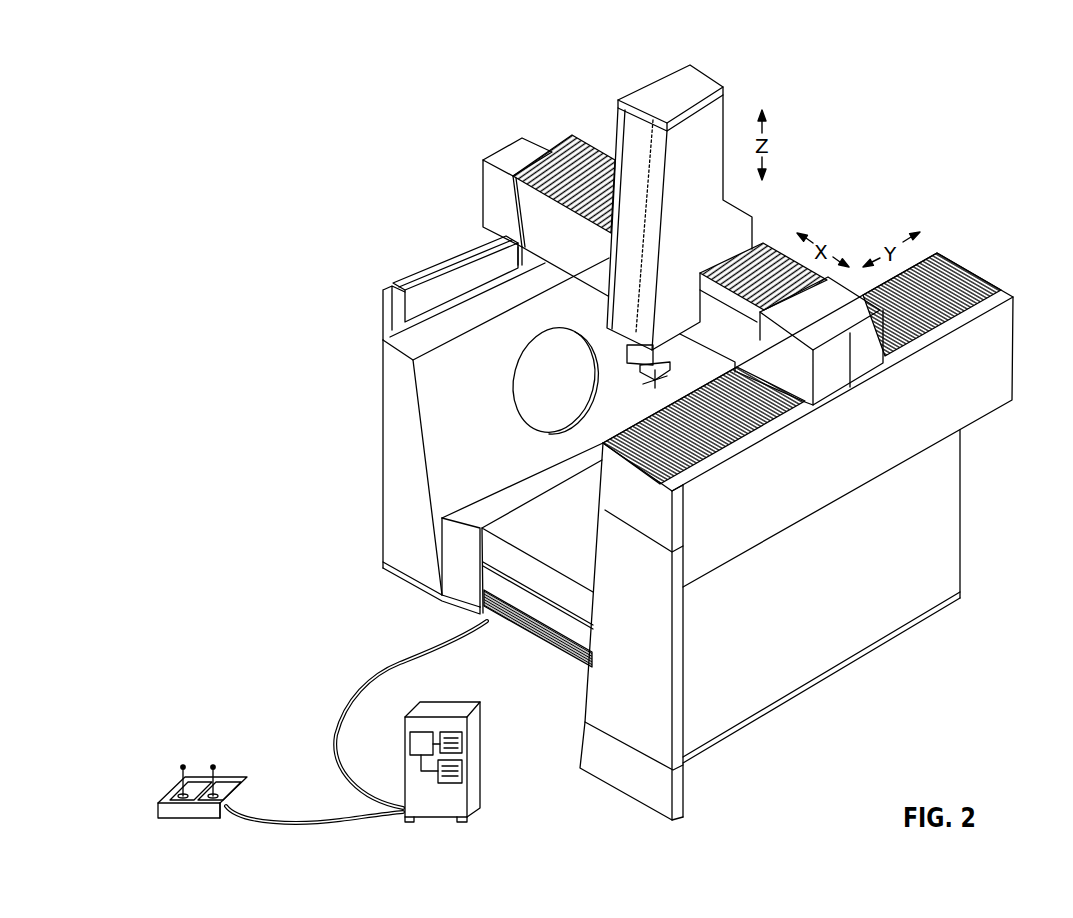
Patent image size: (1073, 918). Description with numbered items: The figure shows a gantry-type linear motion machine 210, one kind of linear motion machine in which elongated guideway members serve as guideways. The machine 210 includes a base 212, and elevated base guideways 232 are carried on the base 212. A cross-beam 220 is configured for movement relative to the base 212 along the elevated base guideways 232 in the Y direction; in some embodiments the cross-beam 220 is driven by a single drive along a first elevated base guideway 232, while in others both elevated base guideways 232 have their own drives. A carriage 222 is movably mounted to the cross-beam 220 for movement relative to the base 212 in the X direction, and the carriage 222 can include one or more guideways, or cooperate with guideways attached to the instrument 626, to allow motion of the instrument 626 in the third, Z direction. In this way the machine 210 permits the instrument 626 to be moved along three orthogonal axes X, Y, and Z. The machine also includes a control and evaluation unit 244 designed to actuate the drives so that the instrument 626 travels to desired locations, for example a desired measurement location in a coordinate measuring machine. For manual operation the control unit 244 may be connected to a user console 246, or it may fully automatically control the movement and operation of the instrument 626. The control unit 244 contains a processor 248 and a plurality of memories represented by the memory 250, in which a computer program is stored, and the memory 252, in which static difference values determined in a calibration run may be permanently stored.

The gantry-type linear motion machine 210 is at (190, 112).
The base 212 is at (520, 530).
The cross-beam 220 is at (570, 158).
The carriage 222 is at (708, 78).
The elevated base guideways 232 is at (945, 286).
The instrument 626 is at (642, 378).
The control and evaluation unit 244 is at (452, 703).
The user console 246 is at (220, 752).
The processor 248 is at (408, 733).
The memory 250 is at (455, 755).
The memory 252 is at (455, 783).